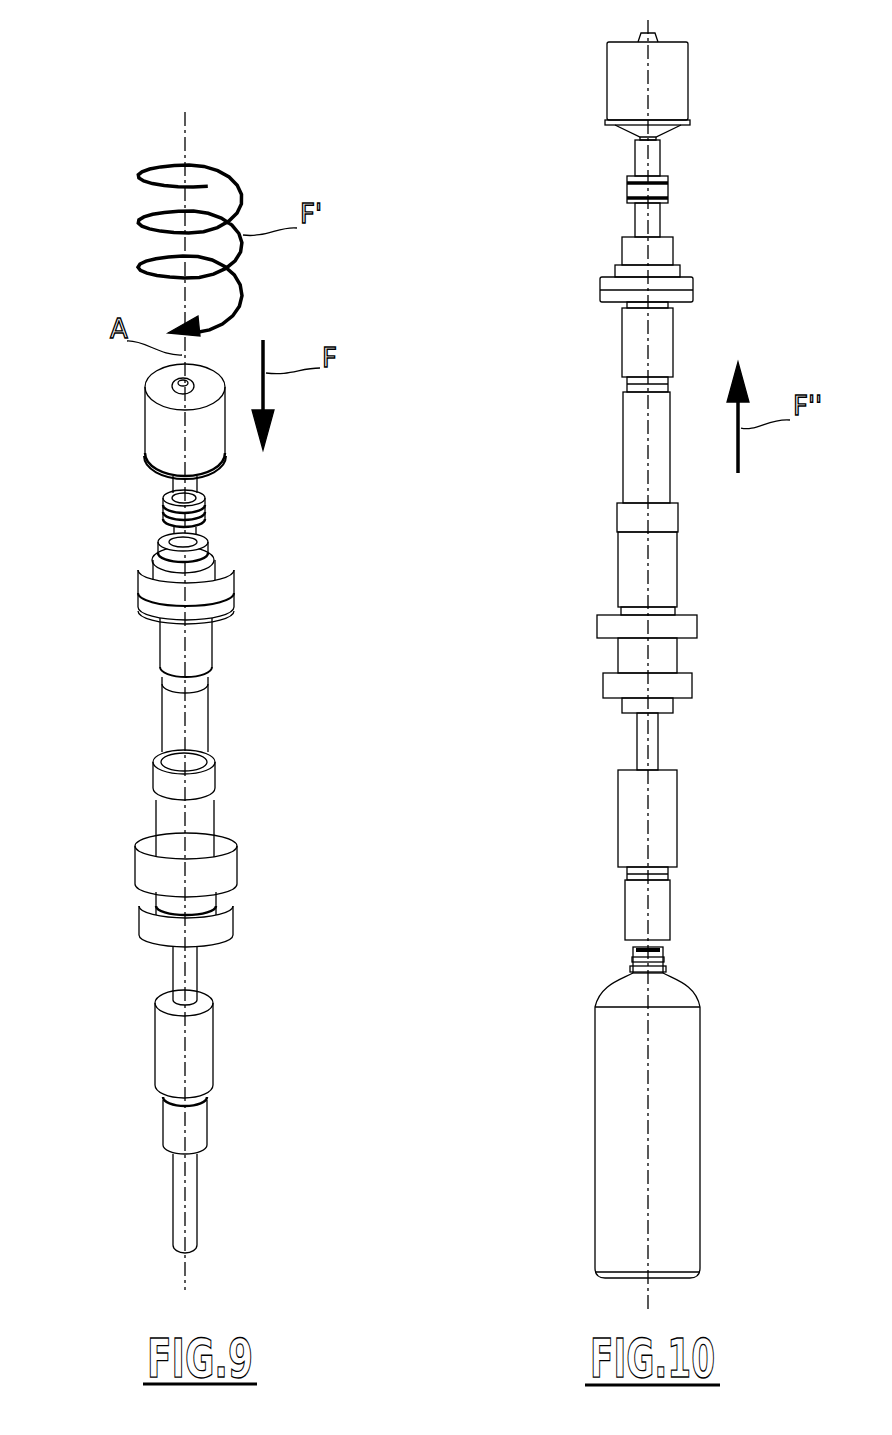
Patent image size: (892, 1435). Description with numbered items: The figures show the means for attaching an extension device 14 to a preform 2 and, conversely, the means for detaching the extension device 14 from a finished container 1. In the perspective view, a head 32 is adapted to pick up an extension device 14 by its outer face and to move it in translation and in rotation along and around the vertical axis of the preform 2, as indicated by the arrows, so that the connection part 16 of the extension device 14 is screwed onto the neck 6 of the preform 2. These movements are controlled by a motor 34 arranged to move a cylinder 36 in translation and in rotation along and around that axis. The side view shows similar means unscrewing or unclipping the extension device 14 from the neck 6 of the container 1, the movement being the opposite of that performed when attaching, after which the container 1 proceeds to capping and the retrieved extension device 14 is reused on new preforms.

In FIG. 10, the container 1 is at (688, 1145).
In FIG. 9, the preform 2 is at (200, 1193).
In FIG. 10, the neck 6 is at (667, 965).
In FIG. 9, the extension device 14 is at (168, 1128).
In FIG. 10, the extension device 14 is at (665, 908).
In FIG. 10, the connection part 16 is at (635, 955).
In FIG. 9, the head 32 is at (168, 1050).
In FIG. 10, the head 32 is at (665, 820).
In FIG. 9, the motor 34 is at (155, 422).
In FIG. 10, the motor 34 is at (675, 87).
In FIG. 9, the cylinder 36 is at (208, 830).